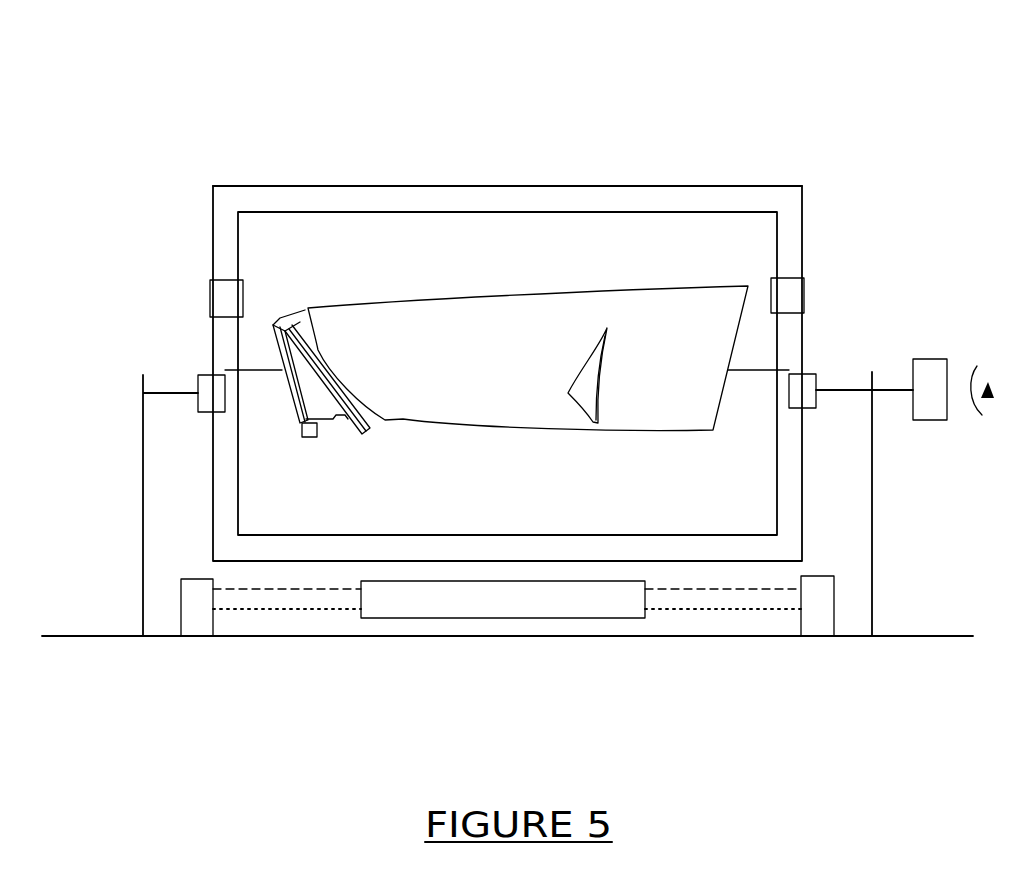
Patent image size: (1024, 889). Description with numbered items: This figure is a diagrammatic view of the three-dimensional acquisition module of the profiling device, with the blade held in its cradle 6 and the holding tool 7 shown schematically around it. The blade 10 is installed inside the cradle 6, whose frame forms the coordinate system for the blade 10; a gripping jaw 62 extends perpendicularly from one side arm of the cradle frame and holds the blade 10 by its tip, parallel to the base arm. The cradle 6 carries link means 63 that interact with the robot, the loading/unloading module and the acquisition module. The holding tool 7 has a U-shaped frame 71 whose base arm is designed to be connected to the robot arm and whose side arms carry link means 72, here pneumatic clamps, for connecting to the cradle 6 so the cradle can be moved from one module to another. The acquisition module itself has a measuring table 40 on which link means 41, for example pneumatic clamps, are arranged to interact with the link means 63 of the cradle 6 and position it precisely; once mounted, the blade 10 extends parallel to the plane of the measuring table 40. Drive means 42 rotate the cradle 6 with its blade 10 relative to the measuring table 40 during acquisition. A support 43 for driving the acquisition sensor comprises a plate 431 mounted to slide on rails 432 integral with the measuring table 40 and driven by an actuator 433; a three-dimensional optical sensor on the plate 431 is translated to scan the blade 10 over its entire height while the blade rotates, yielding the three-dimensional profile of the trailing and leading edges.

The holding tool 7 is at (252, 180).
The frame 71 is at (413, 186).
The link means 72 is at (210, 281).
The link means 63 is at (203, 375).
The gripping jaw 62 is at (770, 372).
The blade 10 is at (520, 313).
The cradle 6 is at (808, 519).
The measuring table 40 is at (122, 637).
The link means 41 is at (142, 442).
The drive means 42 is at (927, 359).
The support 43 is at (526, 624).
The plate 431 is at (410, 619).
The rails 432 is at (763, 588).
The actuator 433 is at (700, 608).